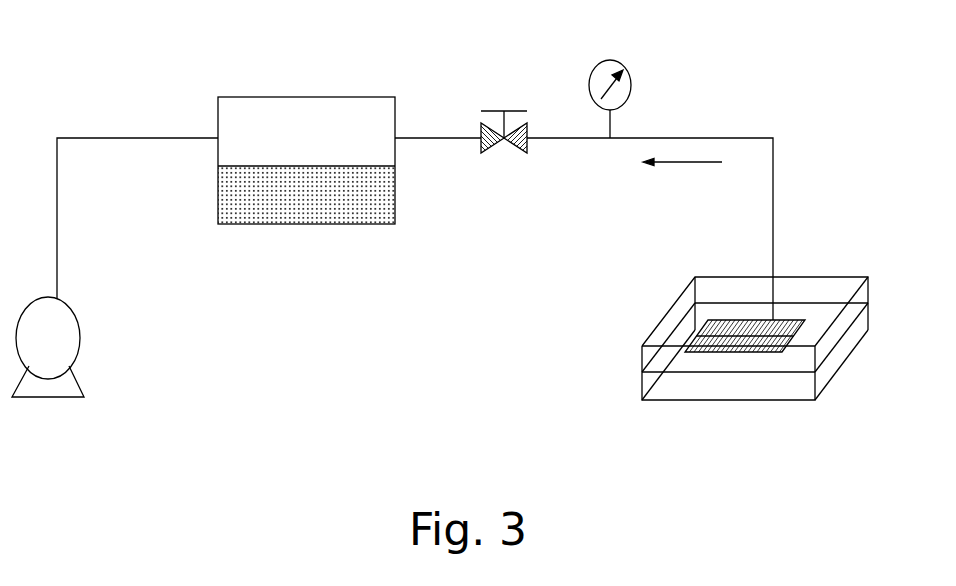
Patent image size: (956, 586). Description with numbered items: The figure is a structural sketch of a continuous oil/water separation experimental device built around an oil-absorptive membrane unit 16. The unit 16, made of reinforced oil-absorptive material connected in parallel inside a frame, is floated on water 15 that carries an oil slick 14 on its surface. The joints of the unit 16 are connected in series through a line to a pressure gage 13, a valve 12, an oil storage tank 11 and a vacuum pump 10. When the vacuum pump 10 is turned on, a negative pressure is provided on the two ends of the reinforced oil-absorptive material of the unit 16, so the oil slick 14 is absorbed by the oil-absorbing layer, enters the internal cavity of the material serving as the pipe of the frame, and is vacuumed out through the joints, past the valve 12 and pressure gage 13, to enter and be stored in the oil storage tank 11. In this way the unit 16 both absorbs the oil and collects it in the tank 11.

The vacuum pump 10 is at (48, 363).
The oil storage tank 11 is at (306, 146).
The valve 12 is at (504, 125).
The pressure gage 13 is at (610, 87).
The oil slick 14 is at (882, 290).
The water 15 is at (727, 411).
The unit 16 is at (703, 328).